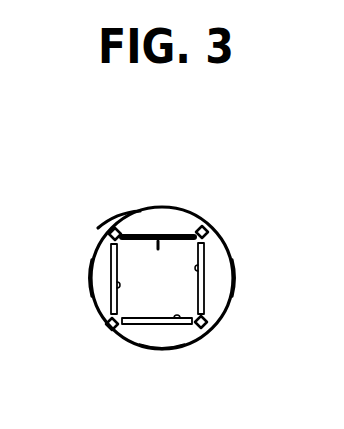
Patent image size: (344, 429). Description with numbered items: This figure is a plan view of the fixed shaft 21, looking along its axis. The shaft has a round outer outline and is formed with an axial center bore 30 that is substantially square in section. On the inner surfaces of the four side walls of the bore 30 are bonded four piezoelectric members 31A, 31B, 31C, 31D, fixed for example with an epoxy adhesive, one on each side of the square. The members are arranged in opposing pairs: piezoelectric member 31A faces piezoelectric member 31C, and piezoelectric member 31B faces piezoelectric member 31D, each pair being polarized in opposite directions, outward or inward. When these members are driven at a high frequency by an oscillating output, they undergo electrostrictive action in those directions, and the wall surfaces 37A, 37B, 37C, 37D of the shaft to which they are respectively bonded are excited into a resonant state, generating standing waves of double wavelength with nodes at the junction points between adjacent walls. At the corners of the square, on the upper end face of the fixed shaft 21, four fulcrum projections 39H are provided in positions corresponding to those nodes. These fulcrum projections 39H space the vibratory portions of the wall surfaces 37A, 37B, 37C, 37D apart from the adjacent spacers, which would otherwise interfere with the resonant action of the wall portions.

The fixed shaft 21 is at (222, 283).
The axial center bore 30 is at (157, 236).
The piezoelectric member 31A is at (187, 333).
The piezoelectric member 31B is at (206, 263).
The piezoelectric member 31C is at (193, 222).
The piezoelectric member 31D is at (110, 282).
The wall surface 37A is at (153, 338).
The wall surface 37B is at (224, 304).
The wall surface 37C is at (131, 224).
The wall surface 37D is at (103, 250).
The fulcrum projection 39H is at (212, 236).